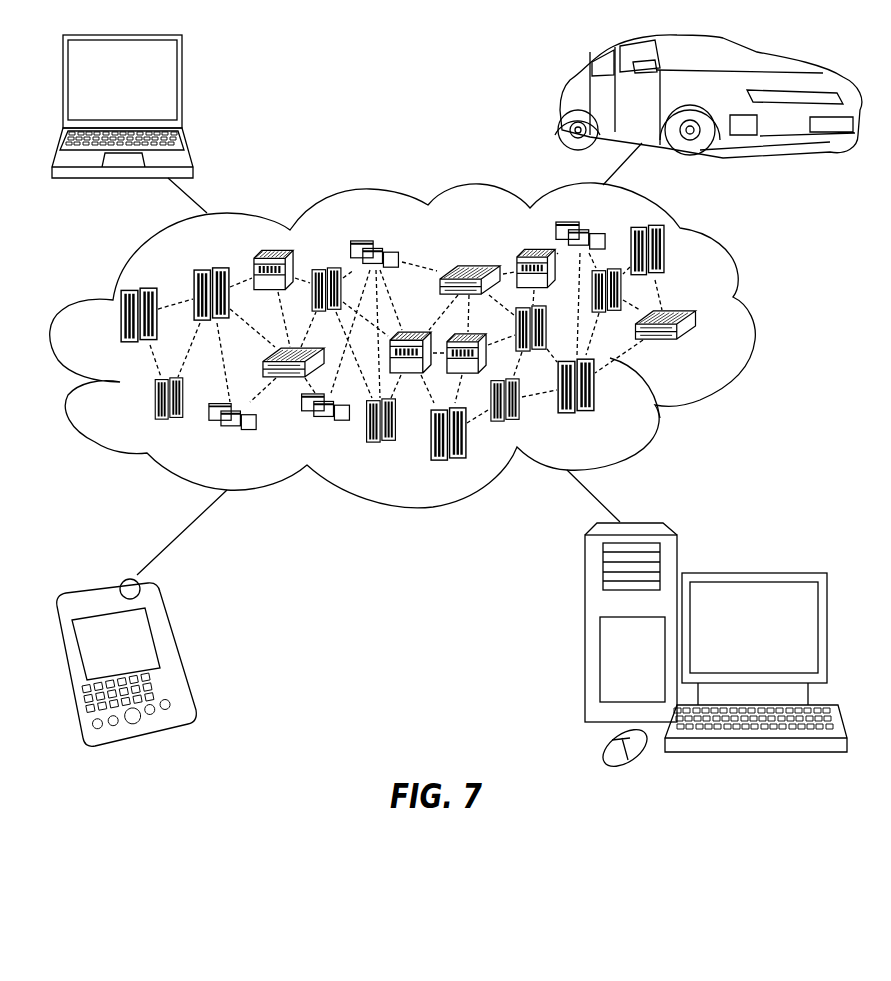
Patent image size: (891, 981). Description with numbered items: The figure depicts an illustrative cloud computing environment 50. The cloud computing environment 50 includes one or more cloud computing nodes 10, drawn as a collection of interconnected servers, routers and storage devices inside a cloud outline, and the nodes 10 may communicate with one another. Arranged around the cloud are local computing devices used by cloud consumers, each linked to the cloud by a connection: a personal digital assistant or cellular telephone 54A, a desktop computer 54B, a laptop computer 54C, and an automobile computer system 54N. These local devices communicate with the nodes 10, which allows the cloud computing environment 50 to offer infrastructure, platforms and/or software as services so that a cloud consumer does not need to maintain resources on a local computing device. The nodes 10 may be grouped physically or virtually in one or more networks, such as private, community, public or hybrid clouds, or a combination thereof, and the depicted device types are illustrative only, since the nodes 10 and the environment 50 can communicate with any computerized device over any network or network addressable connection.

The cloud computing node 10 is at (702, 350).
The cloud computing environment 50 is at (750, 320).
The personal digital assistant (PDA) or cellular telephone 54A is at (173, 655).
The desktop computer 54B is at (757, 572).
The laptop computer 54C is at (183, 85).
The automobile computer system 54N is at (562, 100).